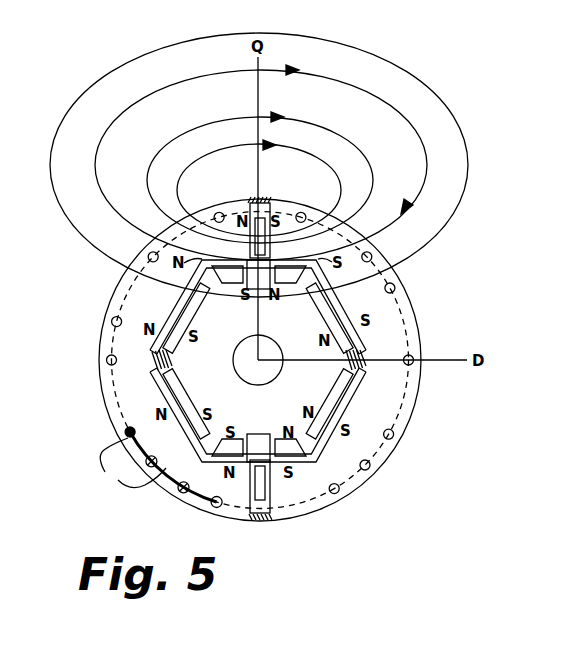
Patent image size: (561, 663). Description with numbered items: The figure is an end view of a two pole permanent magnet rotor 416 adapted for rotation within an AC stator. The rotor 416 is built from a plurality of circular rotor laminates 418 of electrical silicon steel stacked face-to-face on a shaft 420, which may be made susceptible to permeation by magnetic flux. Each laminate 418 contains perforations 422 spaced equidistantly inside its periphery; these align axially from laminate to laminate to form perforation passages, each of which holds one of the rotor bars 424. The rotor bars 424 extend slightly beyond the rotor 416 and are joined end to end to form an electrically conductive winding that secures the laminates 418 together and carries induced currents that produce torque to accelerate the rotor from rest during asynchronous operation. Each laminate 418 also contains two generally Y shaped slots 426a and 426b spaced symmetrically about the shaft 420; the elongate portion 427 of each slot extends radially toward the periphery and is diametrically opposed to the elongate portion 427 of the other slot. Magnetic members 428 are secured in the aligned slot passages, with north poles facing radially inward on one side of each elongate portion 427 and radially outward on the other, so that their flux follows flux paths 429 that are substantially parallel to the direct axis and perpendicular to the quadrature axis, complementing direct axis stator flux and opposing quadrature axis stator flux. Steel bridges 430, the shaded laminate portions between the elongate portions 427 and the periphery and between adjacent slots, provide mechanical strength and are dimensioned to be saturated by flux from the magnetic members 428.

The two pole permanent magnet rotor 416 is at (390, 528).
The circular rotor laminates 418 is at (396, 456).
The shaft 420 is at (262, 336).
The perforations 422 is at (122, 465).
The rotor bars 424 is at (152, 462).
The Y shaped slot 426a is at (347, 436).
The Y shaped slot 426b is at (250, 292).
The elongate portion 427 is at (266, 203).
The magnetic members 428 is at (235, 450).
The flux paths 429 is at (405, 70).
The steel bridges 430 is at (251, 200).